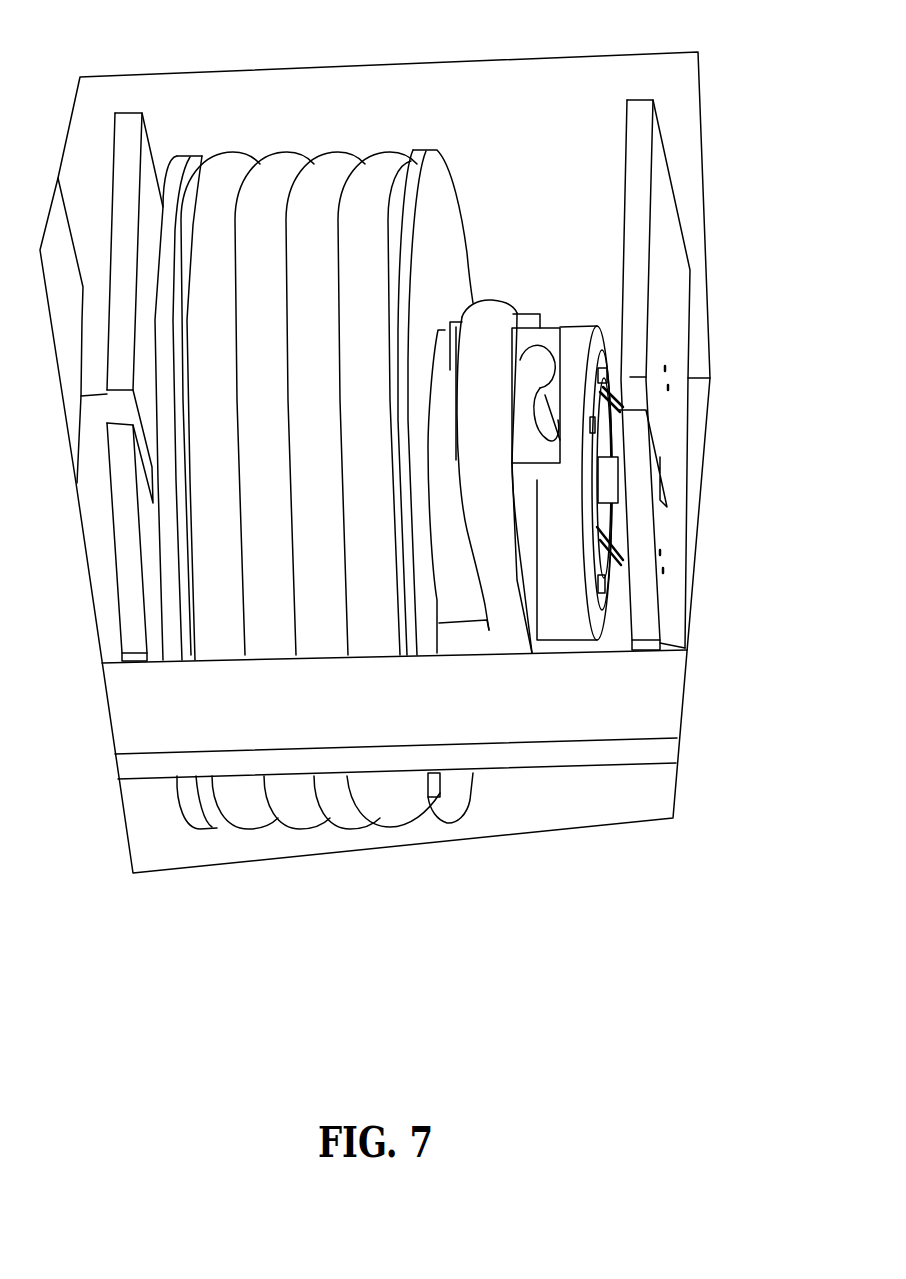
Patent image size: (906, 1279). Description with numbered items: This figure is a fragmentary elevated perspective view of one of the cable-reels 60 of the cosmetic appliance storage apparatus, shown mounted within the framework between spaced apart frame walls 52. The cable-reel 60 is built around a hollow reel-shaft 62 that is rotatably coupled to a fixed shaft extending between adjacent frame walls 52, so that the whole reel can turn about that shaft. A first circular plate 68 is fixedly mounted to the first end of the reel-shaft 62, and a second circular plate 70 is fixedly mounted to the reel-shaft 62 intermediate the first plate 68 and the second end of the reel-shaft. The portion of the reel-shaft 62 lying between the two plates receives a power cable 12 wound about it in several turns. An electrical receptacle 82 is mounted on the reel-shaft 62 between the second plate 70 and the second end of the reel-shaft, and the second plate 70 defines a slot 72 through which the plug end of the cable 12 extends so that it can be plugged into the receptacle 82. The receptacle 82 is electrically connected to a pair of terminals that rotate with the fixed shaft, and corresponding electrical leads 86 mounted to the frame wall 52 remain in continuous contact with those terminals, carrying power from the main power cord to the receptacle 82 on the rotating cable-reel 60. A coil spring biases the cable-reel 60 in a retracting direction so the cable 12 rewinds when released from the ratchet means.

The power cable 12 is at (287, 150).
The frame wall 52 is at (690, 287).
The cable-reel 60 is at (472, 163).
The reel-shaft 62 is at (574, 322).
The first circular plate 68 is at (202, 157).
The second circular plate 70 is at (465, 243).
The slot 72 is at (440, 782).
The electrical receptacle 82 is at (547, 447).
The electrical lead 86 is at (622, 535).